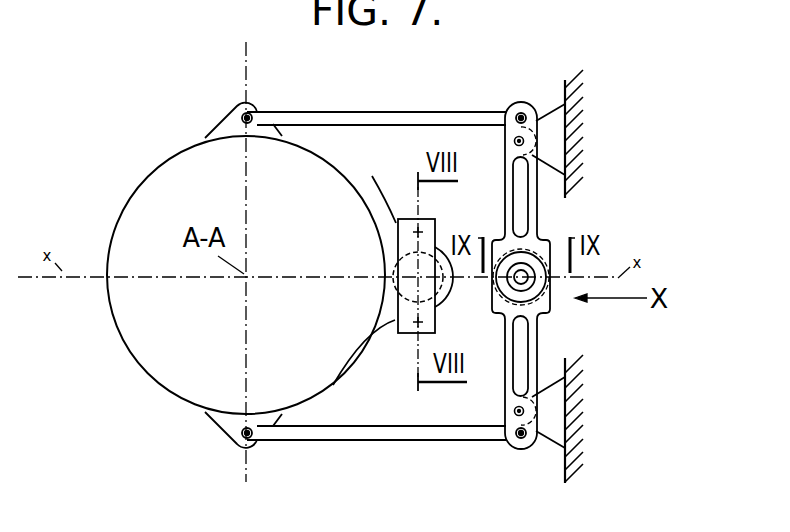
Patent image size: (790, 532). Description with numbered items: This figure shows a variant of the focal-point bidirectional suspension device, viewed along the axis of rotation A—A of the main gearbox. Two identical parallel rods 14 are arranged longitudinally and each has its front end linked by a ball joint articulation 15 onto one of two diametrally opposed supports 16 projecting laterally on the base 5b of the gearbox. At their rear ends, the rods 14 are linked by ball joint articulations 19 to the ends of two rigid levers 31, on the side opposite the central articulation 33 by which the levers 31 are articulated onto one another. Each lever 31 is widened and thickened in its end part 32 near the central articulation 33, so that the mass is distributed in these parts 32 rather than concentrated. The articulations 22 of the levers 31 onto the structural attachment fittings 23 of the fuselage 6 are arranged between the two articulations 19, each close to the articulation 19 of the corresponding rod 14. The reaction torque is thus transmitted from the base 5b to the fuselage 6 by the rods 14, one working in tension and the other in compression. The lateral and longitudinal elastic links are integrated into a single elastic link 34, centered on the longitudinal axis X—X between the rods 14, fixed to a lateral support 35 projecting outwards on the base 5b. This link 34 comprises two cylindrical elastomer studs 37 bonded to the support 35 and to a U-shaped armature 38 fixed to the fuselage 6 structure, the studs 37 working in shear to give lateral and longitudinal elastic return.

The base of the box 5b is at (150, 208).
The fuselage 6 is at (574, 133).
The rod 14 is at (392, 113).
The ball joint articulation 15 is at (250, 114).
The support 16 is at (230, 128).
The ball joint articulation 19 is at (518, 111).
The articulation 22 is at (523, 142).
The attachment fitting 23 is at (548, 128).
The rigid lever 31 is at (523, 181).
The end part of the lever 32 is at (540, 238).
The central articulation 33 is at (524, 279).
The single elastic link 34 is at (370, 308).
The lateral support 35 is at (438, 241).
The cylindrical elastomer stud 37 is at (440, 311).
The U-shaped armature 38 is at (397, 218).